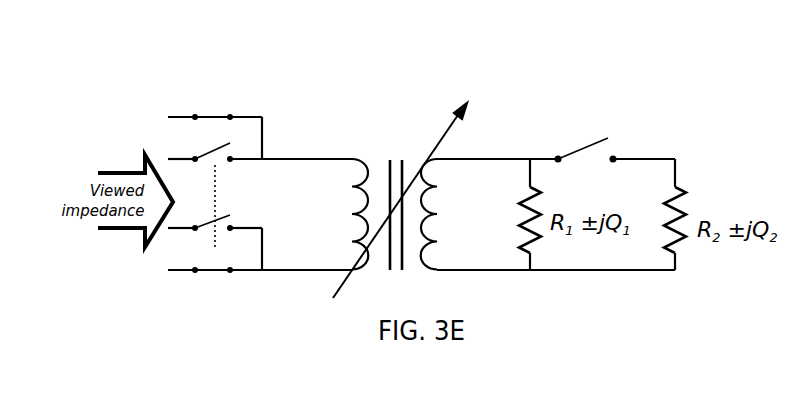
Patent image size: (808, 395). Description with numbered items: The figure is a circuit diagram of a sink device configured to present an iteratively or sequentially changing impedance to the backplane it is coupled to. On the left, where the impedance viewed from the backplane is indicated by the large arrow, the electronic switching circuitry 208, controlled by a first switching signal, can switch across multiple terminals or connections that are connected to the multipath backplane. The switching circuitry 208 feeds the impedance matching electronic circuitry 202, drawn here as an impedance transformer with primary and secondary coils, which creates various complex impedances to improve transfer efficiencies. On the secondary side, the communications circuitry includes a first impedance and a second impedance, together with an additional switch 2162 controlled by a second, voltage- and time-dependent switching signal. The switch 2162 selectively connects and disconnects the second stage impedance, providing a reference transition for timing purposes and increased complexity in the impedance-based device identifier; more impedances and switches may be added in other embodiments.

The electronic switching circuitry 208 is at (218, 92).
The impedance matching electronic circuitry 202 is at (417, 100).
The additional switch 2162 is at (610, 152).